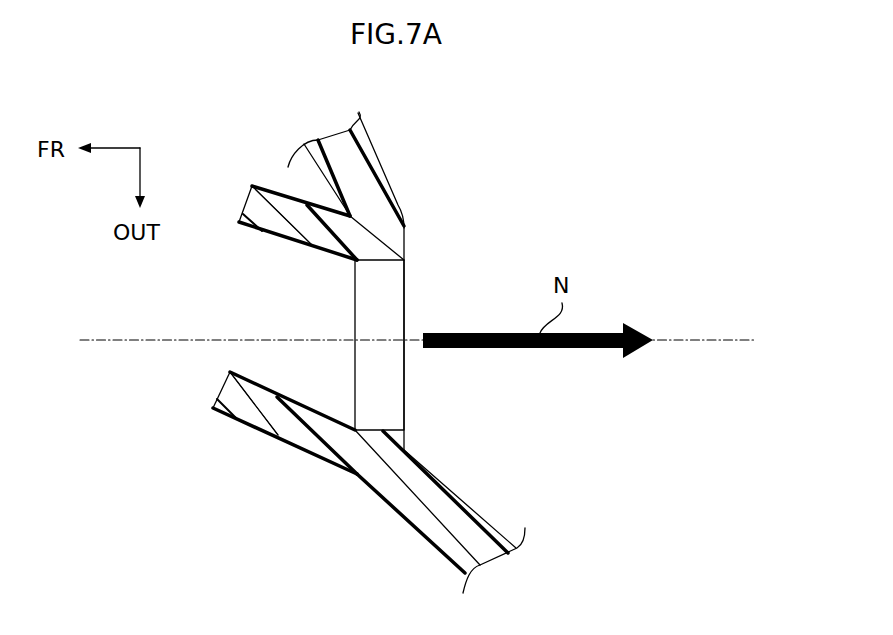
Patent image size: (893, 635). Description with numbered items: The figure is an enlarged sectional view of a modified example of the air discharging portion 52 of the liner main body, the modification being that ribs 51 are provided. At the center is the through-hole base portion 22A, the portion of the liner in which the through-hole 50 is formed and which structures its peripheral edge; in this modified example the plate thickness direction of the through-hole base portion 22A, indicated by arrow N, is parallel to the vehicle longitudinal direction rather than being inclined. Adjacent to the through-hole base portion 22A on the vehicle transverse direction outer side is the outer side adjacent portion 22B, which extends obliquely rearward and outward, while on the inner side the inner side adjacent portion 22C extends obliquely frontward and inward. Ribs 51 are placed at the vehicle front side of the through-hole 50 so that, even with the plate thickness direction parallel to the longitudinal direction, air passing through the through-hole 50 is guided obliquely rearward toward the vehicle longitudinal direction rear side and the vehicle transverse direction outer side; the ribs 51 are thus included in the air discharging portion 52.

The through-hole base portion 22A is at (407, 233).
The outer side adjacent portion 22B is at (468, 500).
The inner side adjacent portion 22C is at (372, 153).
The through-hole 50 is at (383, 303).
The rib 51 is at (280, 222).
The air discharging portion 52 is at (642, 190).